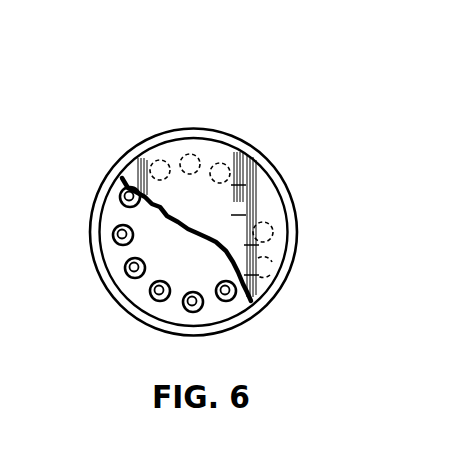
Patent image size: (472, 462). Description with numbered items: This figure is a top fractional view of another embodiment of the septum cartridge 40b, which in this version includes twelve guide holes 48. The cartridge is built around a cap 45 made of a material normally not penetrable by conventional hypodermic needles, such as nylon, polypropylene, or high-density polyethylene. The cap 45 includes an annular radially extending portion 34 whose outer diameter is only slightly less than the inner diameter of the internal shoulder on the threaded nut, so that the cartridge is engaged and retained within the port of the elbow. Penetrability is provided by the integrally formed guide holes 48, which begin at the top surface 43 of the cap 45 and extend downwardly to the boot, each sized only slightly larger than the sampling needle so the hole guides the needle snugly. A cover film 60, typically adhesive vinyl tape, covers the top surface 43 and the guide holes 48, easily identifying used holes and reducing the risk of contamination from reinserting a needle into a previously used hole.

The annular radially extending portion 34 is at (291, 197).
The septum cartridge 40b is at (277, 86).
The top surface 43 is at (208, 265).
The cap 45 is at (110, 250).
The guide holes 48 is at (130, 270).
The cover film 60 is at (166, 186).